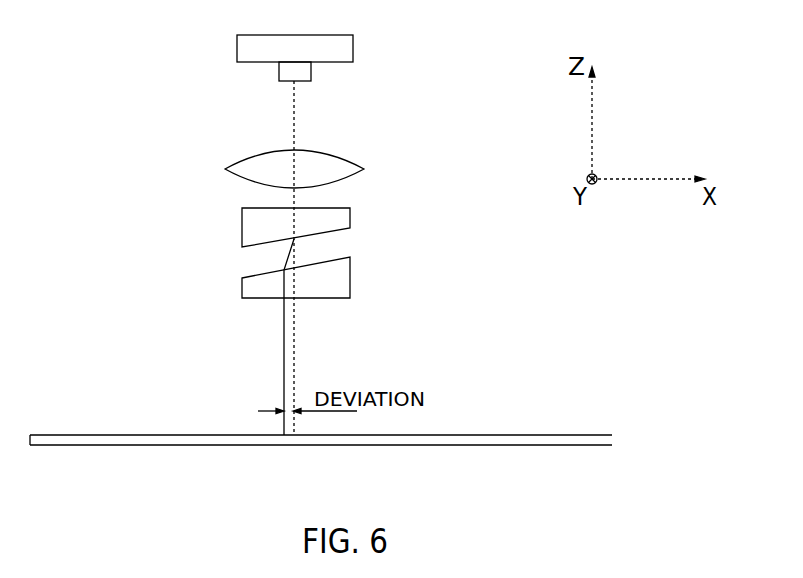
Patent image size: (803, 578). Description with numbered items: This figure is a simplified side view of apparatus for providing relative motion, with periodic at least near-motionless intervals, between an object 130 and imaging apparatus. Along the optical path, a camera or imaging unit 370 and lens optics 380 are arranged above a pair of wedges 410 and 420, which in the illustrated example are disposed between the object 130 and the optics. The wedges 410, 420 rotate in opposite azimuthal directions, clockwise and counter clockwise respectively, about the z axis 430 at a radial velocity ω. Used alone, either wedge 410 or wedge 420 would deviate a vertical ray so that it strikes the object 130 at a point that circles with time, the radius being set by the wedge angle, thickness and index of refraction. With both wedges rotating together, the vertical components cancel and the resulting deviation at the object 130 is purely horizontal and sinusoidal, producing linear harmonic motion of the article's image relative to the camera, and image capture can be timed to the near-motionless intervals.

The light source 370 is at (353, 48).
The z axis 430 is at (294, 113).
The lens 380 is at (255, 167).
The wedge 410 is at (242, 228).
The wedge 420 is at (242, 287).
The object 130 is at (593, 440).